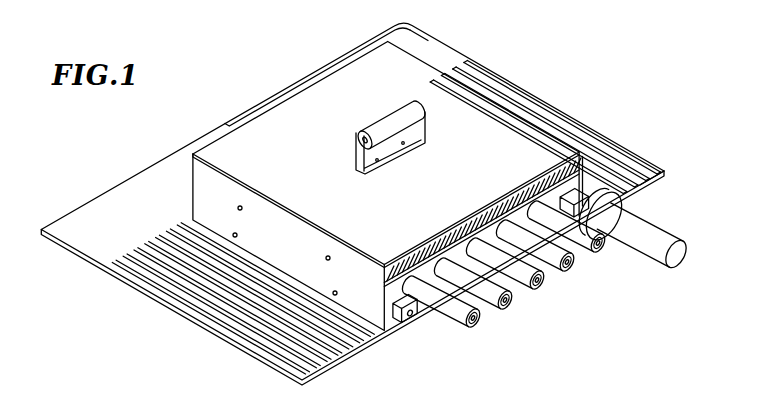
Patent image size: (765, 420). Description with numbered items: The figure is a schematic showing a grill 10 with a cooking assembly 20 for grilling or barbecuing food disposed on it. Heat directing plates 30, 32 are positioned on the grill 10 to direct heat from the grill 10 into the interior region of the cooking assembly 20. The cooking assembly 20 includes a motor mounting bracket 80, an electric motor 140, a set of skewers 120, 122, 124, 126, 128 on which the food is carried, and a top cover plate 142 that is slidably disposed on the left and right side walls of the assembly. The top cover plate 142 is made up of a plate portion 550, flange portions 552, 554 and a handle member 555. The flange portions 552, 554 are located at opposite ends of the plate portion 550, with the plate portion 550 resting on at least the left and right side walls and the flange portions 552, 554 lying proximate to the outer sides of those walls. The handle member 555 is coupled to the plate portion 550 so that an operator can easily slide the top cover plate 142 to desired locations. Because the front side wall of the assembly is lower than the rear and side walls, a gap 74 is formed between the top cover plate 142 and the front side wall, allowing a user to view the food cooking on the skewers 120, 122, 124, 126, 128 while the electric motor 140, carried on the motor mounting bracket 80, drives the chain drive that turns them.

The grill 10 is at (553, 106).
The cooking assembly 20 is at (562, 173).
The heat directing plate 30 is at (115, 210).
The heat directing plate 32 is at (280, 97).
The gap 74 is at (578, 197).
The motor mounting bracket 80 is at (663, 170).
The skewer 120 is at (455, 307).
The skewer 122 is at (495, 308).
The skewer 124 is at (523, 275).
The skewer 126 is at (555, 272).
The skewer 128 is at (580, 235).
The electric motor 140 is at (645, 235).
The top cover plate 142 is at (412, 80).
The plate portion 550 is at (463, 108).
The flange portion 552 is at (362, 257).
The flange portion 554 is at (617, 160).
The handle member 555 is at (378, 128).